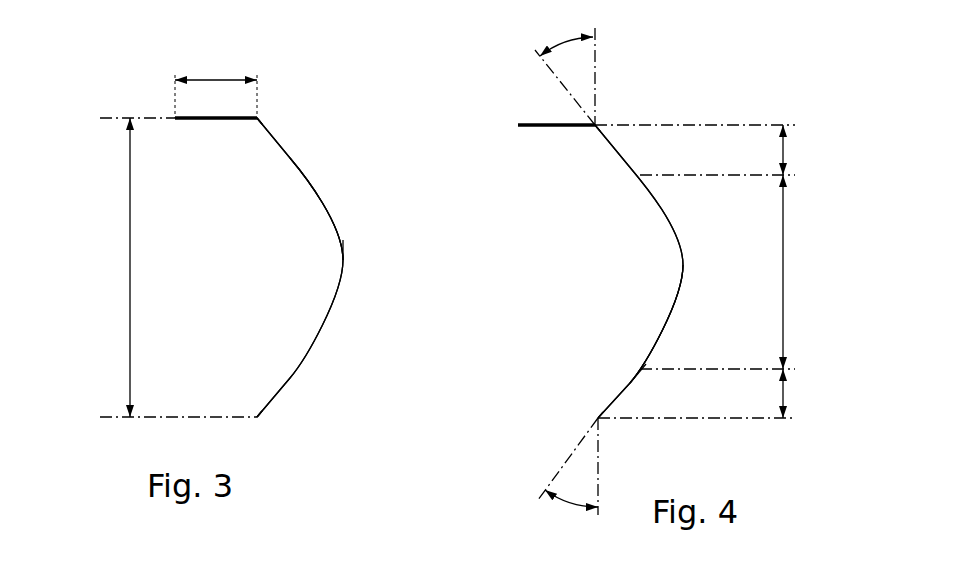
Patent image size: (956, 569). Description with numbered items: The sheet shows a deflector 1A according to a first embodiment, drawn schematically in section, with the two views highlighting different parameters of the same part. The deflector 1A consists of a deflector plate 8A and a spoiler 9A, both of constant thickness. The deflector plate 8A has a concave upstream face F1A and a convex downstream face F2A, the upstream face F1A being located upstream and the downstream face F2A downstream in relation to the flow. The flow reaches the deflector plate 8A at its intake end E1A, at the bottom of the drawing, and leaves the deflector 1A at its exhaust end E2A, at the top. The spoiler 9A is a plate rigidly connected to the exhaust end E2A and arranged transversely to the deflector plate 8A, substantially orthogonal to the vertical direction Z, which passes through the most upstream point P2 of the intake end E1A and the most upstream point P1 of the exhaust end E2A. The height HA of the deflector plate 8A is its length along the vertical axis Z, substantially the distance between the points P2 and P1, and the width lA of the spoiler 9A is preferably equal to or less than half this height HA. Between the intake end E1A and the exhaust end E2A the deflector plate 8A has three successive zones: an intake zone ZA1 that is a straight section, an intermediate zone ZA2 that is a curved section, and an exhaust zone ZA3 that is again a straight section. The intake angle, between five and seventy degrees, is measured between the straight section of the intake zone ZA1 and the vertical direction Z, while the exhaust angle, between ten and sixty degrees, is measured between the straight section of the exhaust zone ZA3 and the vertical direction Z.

In FIG. 3, the deflector 1A is at (292, 134).
In FIG. 4, the deflector 1A is at (708, 84).
In FIG. 3, the deflector plate 8A is at (345, 260).
In FIG. 4, the deflector plate 8A is at (683, 258).
In FIG. 3, the spoiler 9A is at (200, 120).
In FIG. 4, the spoiler 9A is at (560, 125).
In FIG. 3, the intake end E1A is at (262, 420).
In FIG. 4, the intake end E1A is at (593, 416).
In FIG. 3, the exhaust end E2A is at (262, 114).
In FIG. 4, the exhaust end E2A is at (604, 118).
In FIG. 3, the upstream face F1A is at (338, 260).
In FIG. 4, the upstream face F1A is at (650, 349).
In FIG. 3, the downstream face F2A is at (343, 220).
In FIG. 4, the downstream face F2A is at (690, 296).
In FIG. 3, the most upstream point of the exhaust end P1 is at (251, 126).
In FIG. 3, the most upstream point of the intake end P2 is at (255, 412).
In FIG. 3, the height of the deflector plate HA is at (130, 259).
In FIG. 3, the width of the spoiler lA is at (213, 80).
In FIG. 4, the vertical direction Z is at (598, 62).
In FIG. 4, the intake zone ZA1 is at (785, 393).
In FIG. 4, the intermediate zone ZA2 is at (785, 280).
In FIG. 4, the exhaust zone ZA3 is at (785, 150).